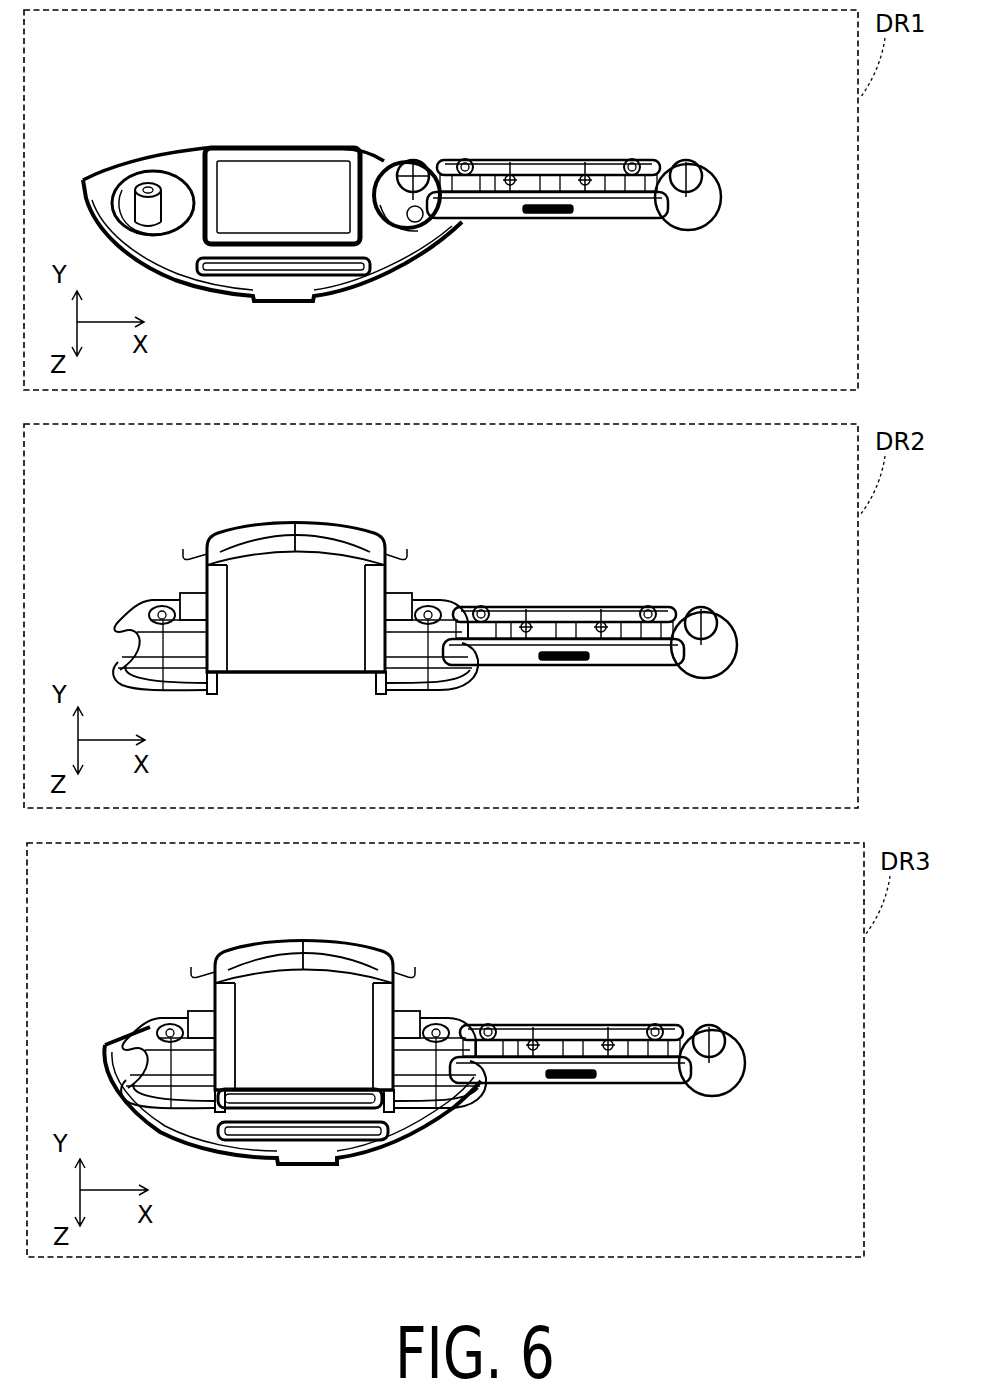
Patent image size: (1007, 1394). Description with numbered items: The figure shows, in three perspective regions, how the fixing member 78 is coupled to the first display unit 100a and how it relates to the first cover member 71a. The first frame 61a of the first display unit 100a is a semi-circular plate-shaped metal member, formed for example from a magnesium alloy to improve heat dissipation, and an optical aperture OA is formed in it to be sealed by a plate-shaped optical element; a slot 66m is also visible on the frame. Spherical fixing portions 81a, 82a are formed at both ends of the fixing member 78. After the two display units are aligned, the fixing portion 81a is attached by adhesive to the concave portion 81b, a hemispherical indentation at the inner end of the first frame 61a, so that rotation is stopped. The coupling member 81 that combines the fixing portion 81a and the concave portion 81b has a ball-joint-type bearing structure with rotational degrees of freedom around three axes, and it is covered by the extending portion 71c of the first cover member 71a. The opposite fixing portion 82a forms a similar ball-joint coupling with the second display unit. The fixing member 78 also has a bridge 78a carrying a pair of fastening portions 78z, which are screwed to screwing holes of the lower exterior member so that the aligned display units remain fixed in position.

The first display unit 100a is at (172, 128).
The optical aperture OA is at (282, 168).
The first frame 61a is at (367, 163).
The slot 66m is at (282, 258).
The coupling member 81 is at (403, 240).
The fixing portion 81a is at (430, 167).
The concave portion 81b is at (437, 228).
The fixing member 78 is at (543, 148).
The fastening portions 78z is at (508, 197).
The bridge 78a is at (547, 220).
The fixing portion 82a is at (688, 210).
The first cover member 71a is at (308, 565).
The extending portion 71c is at (437, 647).